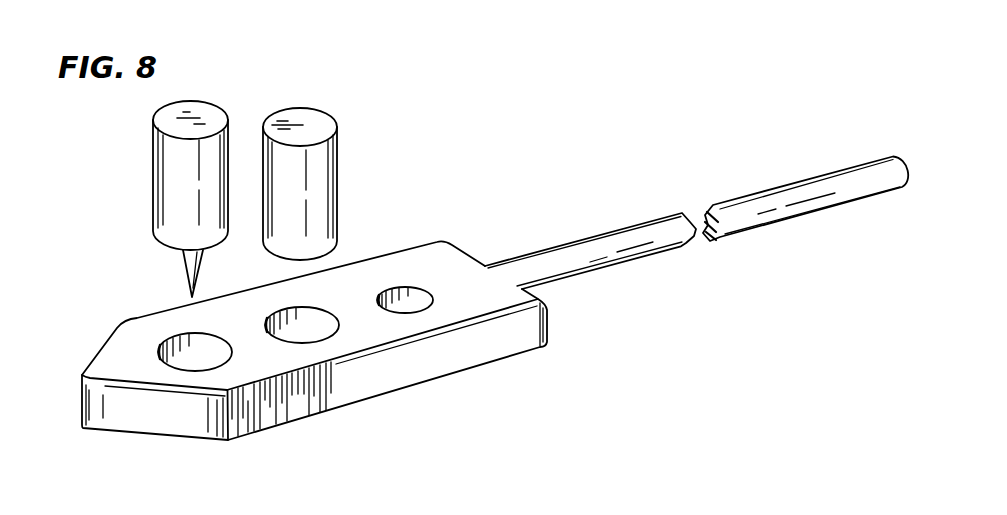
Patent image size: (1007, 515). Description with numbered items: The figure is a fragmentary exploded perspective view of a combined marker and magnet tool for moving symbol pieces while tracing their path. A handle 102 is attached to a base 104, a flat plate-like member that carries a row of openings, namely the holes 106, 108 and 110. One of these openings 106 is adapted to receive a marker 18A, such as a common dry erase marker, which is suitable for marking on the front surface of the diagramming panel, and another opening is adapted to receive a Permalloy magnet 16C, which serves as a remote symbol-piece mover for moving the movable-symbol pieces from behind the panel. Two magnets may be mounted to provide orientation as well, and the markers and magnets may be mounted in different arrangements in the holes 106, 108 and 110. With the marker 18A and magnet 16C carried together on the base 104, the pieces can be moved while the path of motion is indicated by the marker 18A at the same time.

The handle 102 is at (793, 216).
The base 104 is at (483, 368).
The opening 106 is at (210, 333).
The hole 108 is at (313, 308).
The hole 110 is at (410, 287).
The marker 18A is at (155, 200).
The Permalloy magnet 16C is at (338, 227).